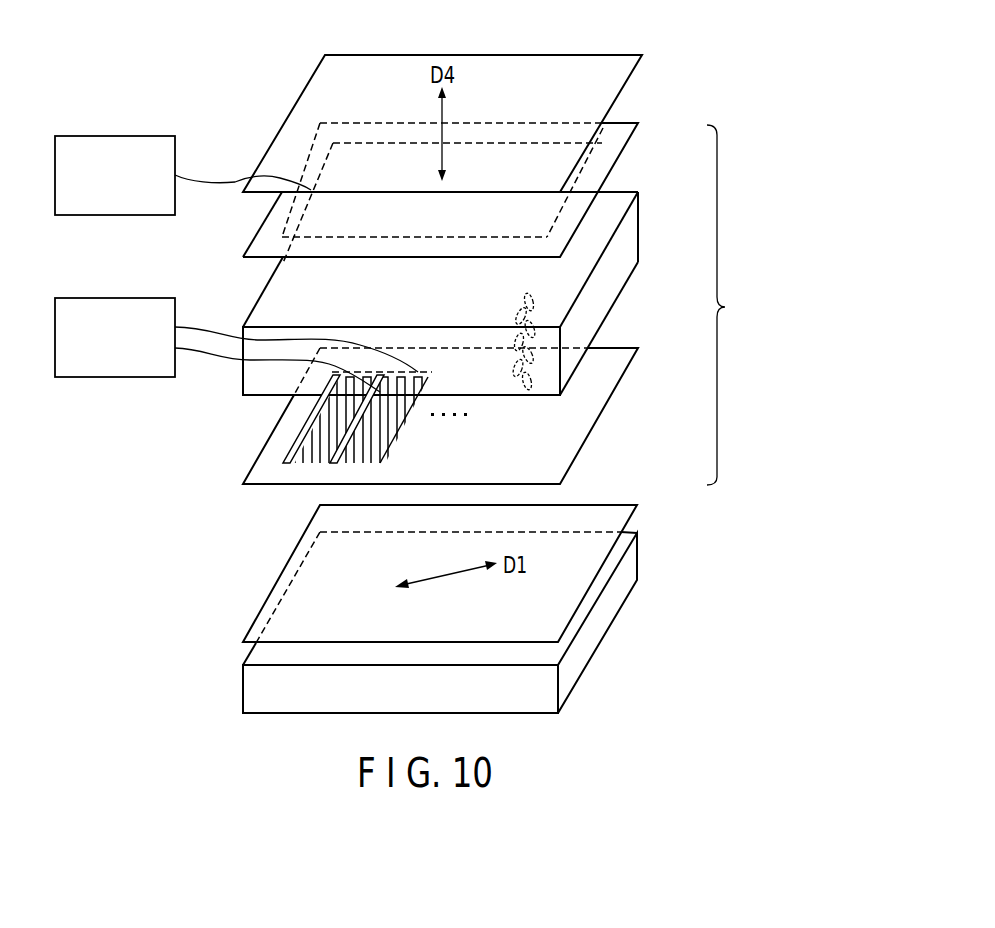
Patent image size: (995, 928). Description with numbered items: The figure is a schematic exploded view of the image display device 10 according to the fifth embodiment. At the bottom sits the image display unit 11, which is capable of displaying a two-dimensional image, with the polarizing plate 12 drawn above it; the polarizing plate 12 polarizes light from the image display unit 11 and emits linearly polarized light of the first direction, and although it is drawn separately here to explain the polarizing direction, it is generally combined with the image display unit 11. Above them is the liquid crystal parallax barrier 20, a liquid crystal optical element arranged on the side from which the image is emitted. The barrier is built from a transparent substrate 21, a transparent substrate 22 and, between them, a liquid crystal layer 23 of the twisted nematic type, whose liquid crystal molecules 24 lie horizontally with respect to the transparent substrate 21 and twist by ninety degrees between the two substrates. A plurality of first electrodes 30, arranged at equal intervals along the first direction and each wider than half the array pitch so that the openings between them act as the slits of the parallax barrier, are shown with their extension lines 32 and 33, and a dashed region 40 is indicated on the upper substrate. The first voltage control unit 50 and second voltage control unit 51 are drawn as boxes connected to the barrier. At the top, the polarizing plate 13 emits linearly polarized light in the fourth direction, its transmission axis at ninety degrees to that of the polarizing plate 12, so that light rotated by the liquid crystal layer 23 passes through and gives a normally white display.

The image display device 10 is at (476, 26).
The image display unit 11 is at (593, 640).
The polarizing plate 12 is at (623, 520).
The polarizing plate 13 is at (629, 77).
The liquid crystal parallax barrier 20 is at (731, 305).
The transparent substrate 21 is at (585, 416).
The transparent substrate 22 is at (613, 144).
The liquid crystal layer 23 is at (630, 236).
The liquid crystal molecules 24 is at (530, 297).
The first electrodes 30 is at (392, 452).
The extension line 32 is at (338, 464).
The extension line 33 is at (441, 373).
The electrode region 40 is at (583, 172).
The first voltage control unit 50 is at (55, 342).
The second voltage control unit 51 is at (55, 176).